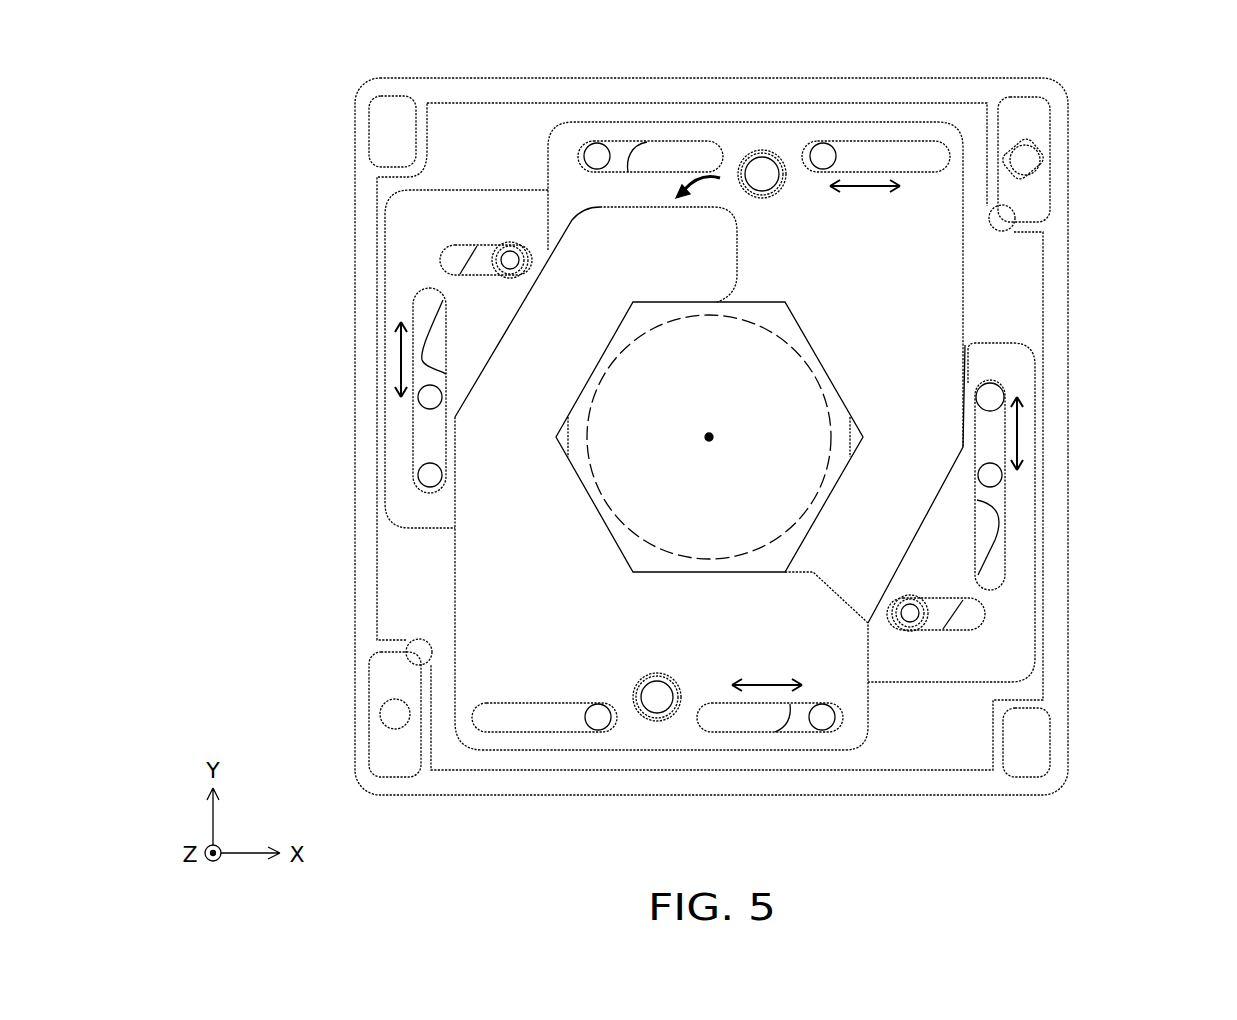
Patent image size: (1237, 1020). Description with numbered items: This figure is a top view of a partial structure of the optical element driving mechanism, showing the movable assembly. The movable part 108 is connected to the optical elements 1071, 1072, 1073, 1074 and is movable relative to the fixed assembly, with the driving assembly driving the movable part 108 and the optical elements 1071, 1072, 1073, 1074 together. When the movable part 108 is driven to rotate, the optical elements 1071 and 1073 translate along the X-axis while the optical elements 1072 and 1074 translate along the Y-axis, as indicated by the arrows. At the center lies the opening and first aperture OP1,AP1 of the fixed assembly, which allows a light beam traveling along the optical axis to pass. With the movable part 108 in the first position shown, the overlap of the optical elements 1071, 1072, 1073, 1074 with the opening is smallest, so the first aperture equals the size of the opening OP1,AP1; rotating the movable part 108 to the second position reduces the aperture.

The movable part 108 is at (763, 160).
The optical element 1071 is at (926, 132).
The optical element 1072 is at (403, 250).
The optical element 1073 is at (483, 573).
The optical element 1074 is at (1020, 525).
The opening and first aperture OP1,AP1 is at (820, 383).